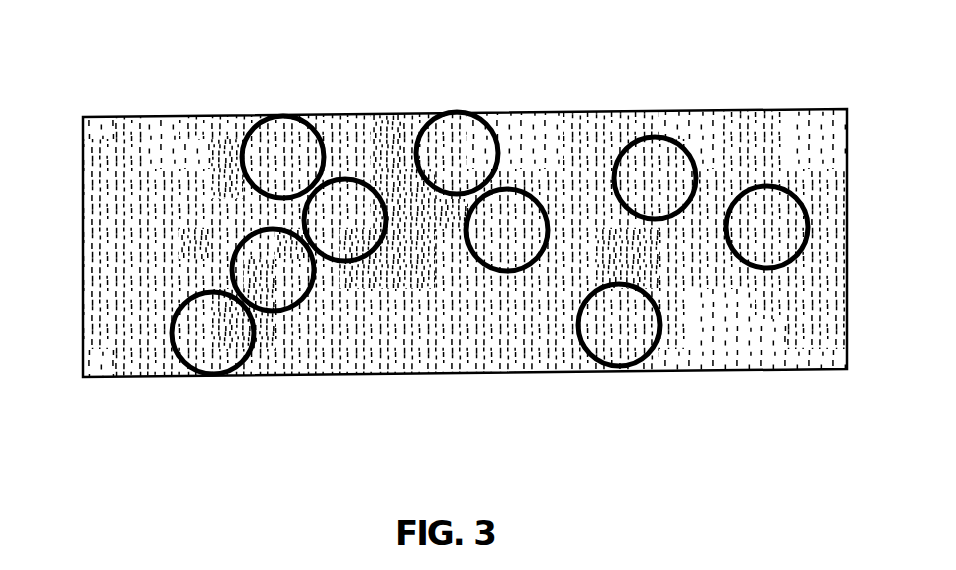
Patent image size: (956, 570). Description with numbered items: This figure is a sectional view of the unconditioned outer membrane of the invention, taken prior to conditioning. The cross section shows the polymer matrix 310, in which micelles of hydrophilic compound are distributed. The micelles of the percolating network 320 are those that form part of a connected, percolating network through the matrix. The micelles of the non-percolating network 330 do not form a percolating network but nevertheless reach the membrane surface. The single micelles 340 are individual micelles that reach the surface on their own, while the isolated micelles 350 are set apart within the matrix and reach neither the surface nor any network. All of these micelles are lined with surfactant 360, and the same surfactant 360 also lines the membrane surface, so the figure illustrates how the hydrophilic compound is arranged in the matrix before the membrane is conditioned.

The polymer matrix 310 is at (168, 155).
The micelles of a percolating network 320 is at (278, 152).
The micelles of a non-percolating network reaching the membrane surface 330 is at (455, 153).
The single micelles reaching the surface 340 is at (612, 328).
The isolated micelles 350 is at (648, 162).
The surfactant 360 is at (768, 228).